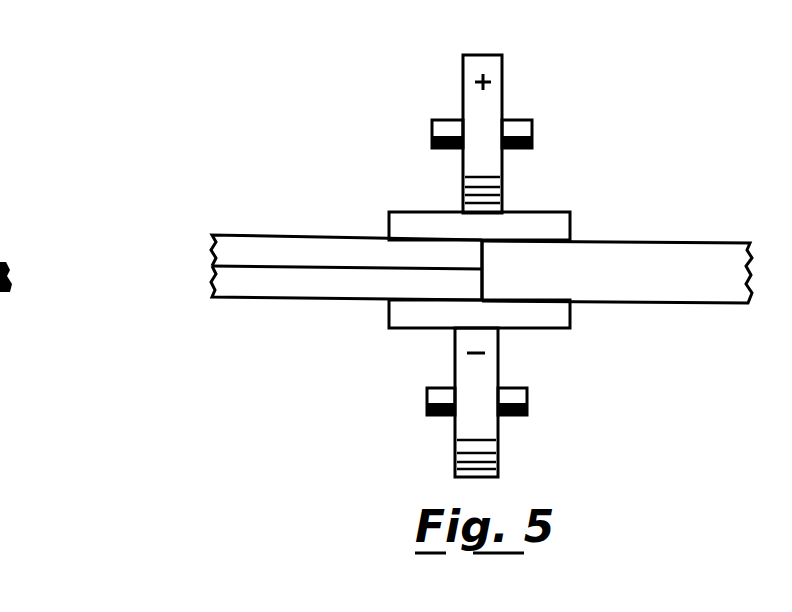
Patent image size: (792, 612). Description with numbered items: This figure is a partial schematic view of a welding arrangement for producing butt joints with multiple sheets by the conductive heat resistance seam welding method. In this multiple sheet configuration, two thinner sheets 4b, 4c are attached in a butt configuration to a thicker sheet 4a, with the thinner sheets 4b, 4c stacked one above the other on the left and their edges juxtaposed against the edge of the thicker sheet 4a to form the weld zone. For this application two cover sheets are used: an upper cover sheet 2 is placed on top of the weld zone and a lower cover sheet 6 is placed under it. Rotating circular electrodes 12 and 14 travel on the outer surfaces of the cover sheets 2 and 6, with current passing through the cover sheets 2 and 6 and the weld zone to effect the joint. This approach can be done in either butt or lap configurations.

The upper cover sheet 2 is at (576, 217).
The lower cover sheet 6 is at (556, 315).
The rotating circular electrode 12 is at (496, 70).
The rotating circular electrode 14 is at (465, 428).
The thicker sheet 4a is at (675, 252).
The thinner sheet 4b is at (296, 247).
The thinner sheet 4c is at (332, 285).